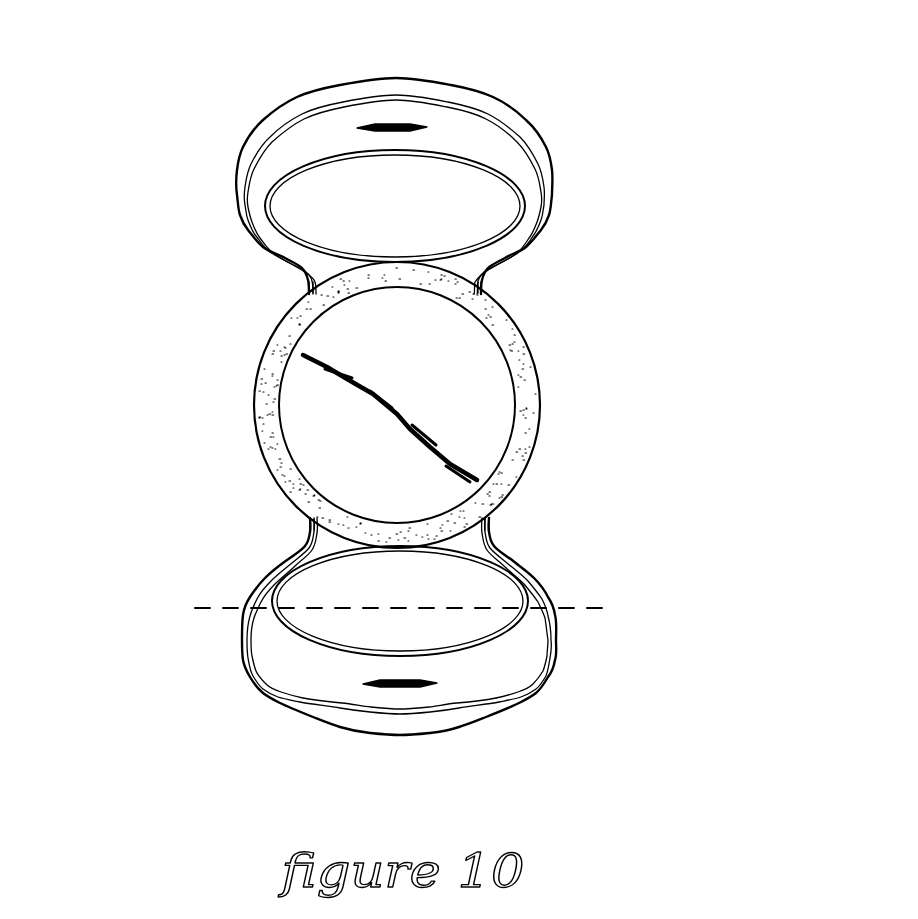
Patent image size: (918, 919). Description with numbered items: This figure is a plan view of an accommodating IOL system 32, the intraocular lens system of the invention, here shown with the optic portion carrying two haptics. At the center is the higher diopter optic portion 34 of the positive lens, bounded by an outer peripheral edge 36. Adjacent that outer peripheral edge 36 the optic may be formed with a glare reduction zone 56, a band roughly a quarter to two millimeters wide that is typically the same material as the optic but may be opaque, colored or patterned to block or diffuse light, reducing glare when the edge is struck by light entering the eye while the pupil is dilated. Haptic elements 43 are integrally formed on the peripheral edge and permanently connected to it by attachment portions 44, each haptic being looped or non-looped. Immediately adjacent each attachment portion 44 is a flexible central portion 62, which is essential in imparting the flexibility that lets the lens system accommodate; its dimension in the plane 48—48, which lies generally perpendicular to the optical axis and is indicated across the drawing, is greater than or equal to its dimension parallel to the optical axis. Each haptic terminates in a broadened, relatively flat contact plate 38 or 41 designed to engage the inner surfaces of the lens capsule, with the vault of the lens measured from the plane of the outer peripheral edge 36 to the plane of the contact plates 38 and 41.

The IOL system 32 is at (608, 222).
The higher diopter optic portion 34 is at (390, 418).
The outer peripheral edge 36 is at (545, 403).
The contact plate 38 is at (403, 115).
The contact plate 41 is at (308, 97).
The haptic element 43 is at (420, 84).
The attachment portion 44 is at (305, 290).
The plane 48— 48 is at (400, 609).
The glare reduction zone 56 is at (256, 400).
The flexible central portion 62 is at (548, 192).